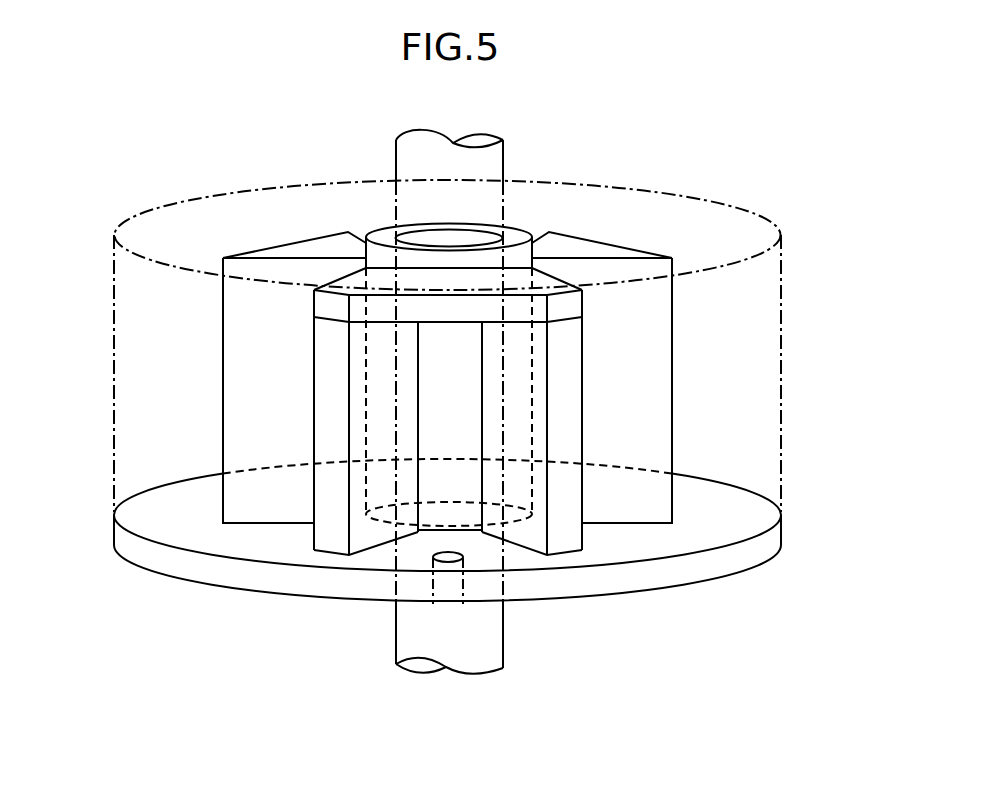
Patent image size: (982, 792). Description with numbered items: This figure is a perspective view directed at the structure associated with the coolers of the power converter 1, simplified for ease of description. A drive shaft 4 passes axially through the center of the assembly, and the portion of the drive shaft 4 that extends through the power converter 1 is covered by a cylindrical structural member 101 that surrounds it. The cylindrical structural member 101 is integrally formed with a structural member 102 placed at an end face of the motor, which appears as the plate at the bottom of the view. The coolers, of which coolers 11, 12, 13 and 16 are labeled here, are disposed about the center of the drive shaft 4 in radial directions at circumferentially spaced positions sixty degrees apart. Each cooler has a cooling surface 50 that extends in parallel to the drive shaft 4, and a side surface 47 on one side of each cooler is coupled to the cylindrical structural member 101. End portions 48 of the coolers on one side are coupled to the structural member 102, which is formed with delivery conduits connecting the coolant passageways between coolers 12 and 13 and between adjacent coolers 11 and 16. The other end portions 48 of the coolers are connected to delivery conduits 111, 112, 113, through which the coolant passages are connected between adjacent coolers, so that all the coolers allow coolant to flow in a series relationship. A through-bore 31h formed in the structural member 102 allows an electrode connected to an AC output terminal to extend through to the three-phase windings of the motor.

The power converter 1 is at (720, 180).
The drive shaft 4 is at (505, 161).
The cooler 11 is at (314, 408).
The cooler 12 is at (582, 408).
The cooler 13 is at (672, 368).
The cooler 16 is at (222, 368).
The through-bore 31h is at (446, 561).
The side surface 47 is at (480, 440).
The end portion 48 is at (364, 556).
The cooling surface 50 is at (538, 341).
The cylindrical structural member 101 is at (516, 232).
The structural member 102 is at (721, 492).
The delivery conduit 111 is at (427, 306).
The delivery conduit 112 is at (578, 244).
The delivery conduit 113 is at (314, 246).